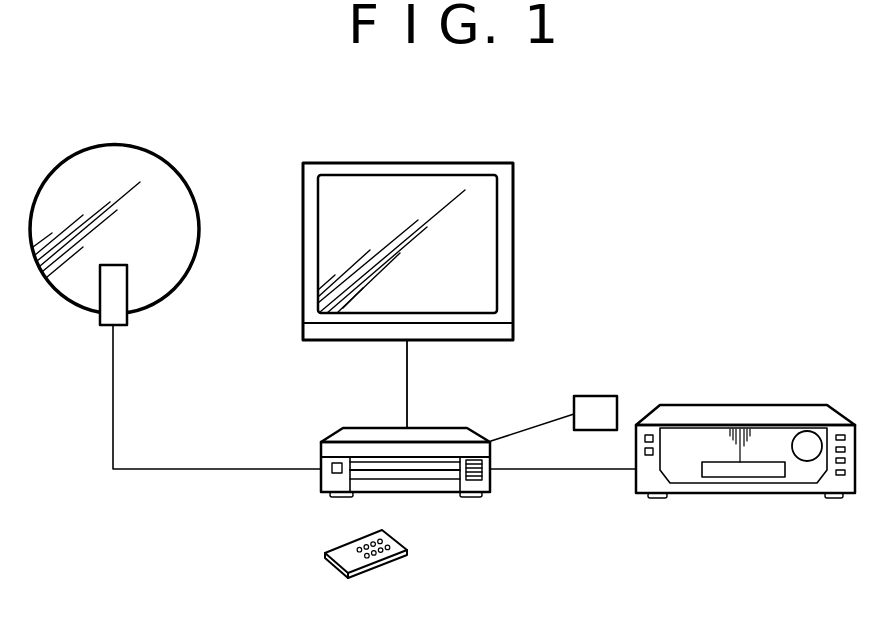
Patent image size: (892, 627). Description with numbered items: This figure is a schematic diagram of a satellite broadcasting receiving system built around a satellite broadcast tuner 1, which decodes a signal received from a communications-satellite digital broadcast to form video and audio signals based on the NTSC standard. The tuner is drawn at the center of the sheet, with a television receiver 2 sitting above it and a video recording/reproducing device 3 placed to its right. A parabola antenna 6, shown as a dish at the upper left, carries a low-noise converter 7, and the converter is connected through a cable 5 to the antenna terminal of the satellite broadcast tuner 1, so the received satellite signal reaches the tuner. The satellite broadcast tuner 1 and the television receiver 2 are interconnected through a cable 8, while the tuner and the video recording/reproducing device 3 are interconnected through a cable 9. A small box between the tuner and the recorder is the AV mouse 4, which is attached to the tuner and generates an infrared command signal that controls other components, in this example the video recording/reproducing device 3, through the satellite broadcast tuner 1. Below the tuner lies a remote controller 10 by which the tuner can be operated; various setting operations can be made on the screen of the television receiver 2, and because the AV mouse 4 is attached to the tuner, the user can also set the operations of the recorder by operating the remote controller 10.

The satellite broadcast tuner 1 is at (371, 428).
The television receiver 2 is at (427, 162).
The video recording/reproducing device 3 is at (764, 405).
The AV mouse 4 is at (596, 396).
The cable 5 is at (240, 469).
The parabola antenna 6 is at (182, 171).
The low-noise converter 7 is at (108, 296).
The cable 8 is at (409, 372).
The cable 9 is at (566, 470).
The remote controller 10 is at (377, 568).